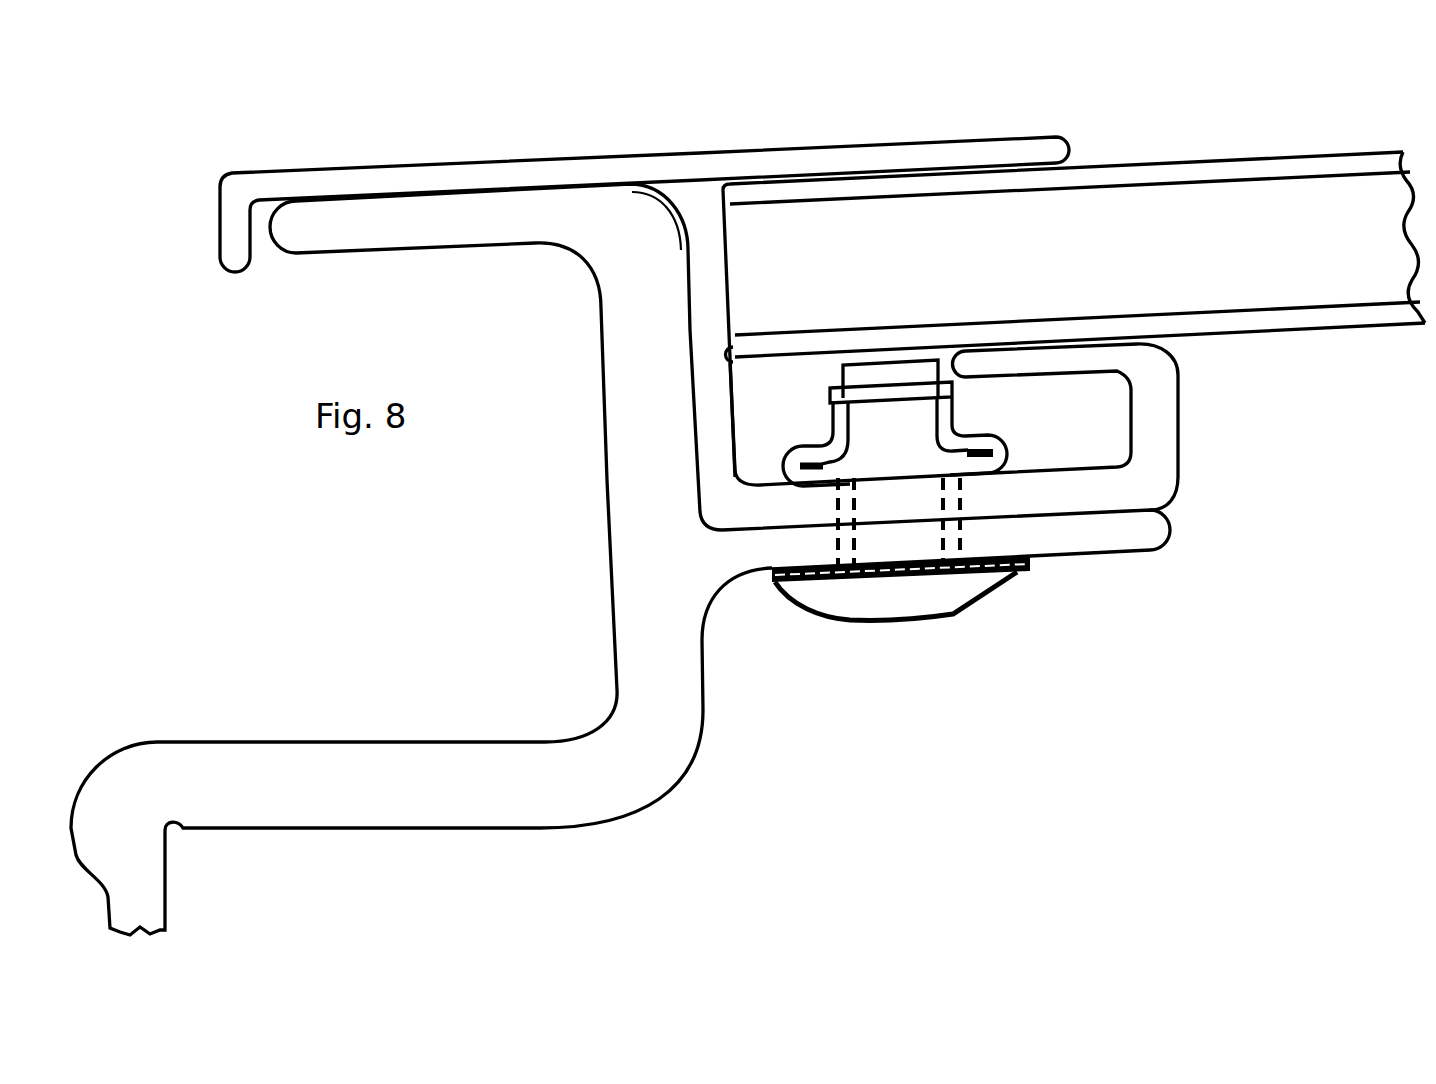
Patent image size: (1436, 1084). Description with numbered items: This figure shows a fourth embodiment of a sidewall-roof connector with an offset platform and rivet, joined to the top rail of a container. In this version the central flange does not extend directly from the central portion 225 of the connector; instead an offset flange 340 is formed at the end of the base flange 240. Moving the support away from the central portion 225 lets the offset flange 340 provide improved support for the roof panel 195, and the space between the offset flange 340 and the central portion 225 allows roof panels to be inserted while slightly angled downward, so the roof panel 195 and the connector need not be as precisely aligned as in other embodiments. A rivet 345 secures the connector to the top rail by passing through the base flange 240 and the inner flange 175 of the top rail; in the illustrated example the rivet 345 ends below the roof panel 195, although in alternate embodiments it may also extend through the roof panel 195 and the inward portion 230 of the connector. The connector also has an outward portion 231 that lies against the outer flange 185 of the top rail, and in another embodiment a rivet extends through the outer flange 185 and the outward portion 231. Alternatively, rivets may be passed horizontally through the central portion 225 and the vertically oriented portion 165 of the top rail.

The vertically oriented portion 165 is at (652, 413).
The inner flange 175 is at (1052, 540).
The outer flange 185 is at (395, 232).
The roof panel 195 is at (1283, 277).
The central portion 225 is at (713, 353).
The inward portion 230 is at (840, 158).
The outward portion 231 is at (404, 186).
The base flange 240 is at (1050, 485).
The offset flange 340 is at (1039, 358).
The rivet 345 is at (862, 597).